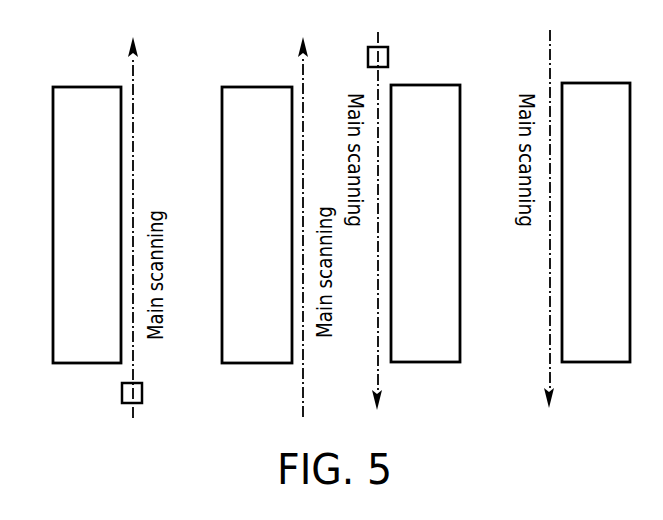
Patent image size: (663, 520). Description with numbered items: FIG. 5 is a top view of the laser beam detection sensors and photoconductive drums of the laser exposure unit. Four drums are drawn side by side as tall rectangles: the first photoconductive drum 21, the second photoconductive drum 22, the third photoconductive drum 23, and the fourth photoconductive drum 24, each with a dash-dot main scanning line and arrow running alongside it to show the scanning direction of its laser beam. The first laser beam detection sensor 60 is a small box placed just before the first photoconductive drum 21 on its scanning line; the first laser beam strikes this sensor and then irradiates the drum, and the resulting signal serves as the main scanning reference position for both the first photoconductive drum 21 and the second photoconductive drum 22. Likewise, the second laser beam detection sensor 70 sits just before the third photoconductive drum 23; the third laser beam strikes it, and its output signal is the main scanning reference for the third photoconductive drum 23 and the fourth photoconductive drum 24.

The first photoconductive drum 21 is at (88, 87).
The second photoconductive drum 22 is at (259, 87).
The third photoconductive drum 23 is at (425, 85).
The fourth photoconductive drum 24 is at (600, 83).
The first laser beam detection sensor 60 is at (142, 392).
The second laser beam detection sensor 70 is at (388, 56).